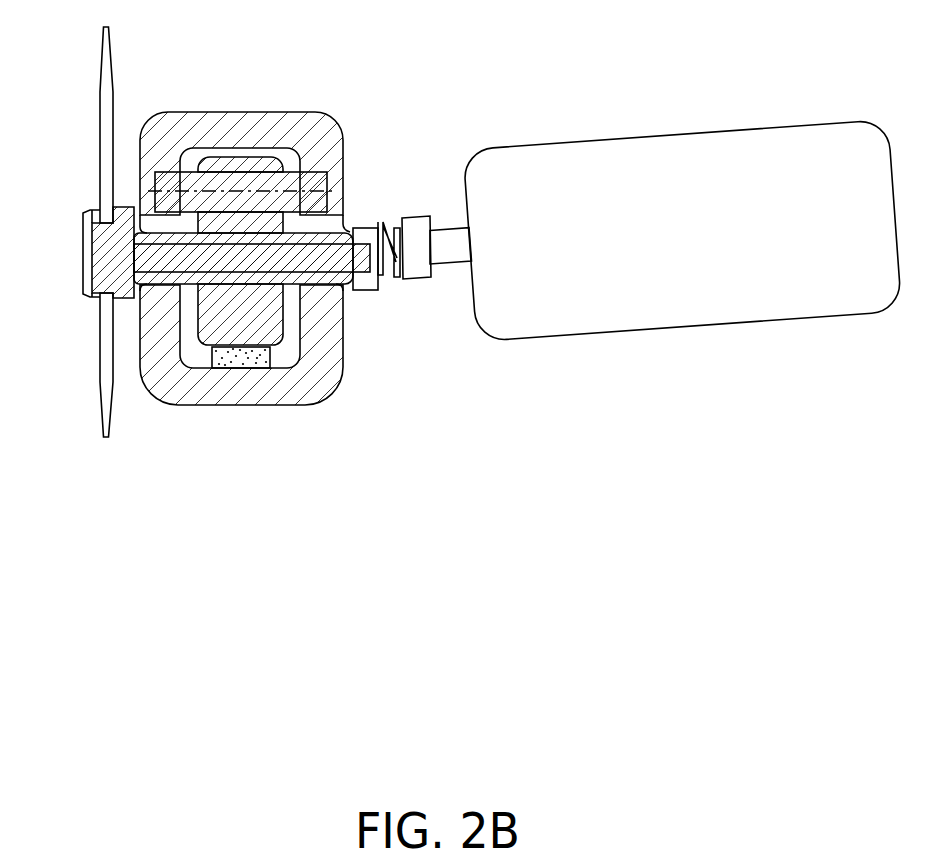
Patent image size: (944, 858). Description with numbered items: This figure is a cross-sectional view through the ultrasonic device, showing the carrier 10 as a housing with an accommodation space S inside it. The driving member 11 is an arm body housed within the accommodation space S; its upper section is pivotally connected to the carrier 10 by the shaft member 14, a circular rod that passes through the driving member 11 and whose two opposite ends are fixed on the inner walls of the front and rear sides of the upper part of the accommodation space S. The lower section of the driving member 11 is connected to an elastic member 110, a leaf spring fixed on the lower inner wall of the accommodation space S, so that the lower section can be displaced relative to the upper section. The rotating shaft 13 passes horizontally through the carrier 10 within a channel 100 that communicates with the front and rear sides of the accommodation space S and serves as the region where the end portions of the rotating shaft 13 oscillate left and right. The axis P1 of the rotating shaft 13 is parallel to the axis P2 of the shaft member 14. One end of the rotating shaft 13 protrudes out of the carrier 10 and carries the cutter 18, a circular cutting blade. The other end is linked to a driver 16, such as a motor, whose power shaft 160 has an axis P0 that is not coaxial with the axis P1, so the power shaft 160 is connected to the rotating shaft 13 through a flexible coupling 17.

The carrier 10 is at (293, 397).
The channel 100 is at (147, 231).
The driving member 11 is at (202, 337).
The elastic member 110 is at (238, 363).
The rotating shaft 13 is at (97, 238).
The shaft member 14 is at (237, 180).
The driver 16 is at (590, 150).
The power shaft 160 is at (440, 232).
The flexible coupling 17 is at (400, 225).
The cutter 18 is at (106, 400).
The accommodation space S is at (192, 155).
The axis of the power shaft P0 is at (510, 244).
The axis of the rotating shaft P1 is at (535, 240).
The axis of the shaft member P2 is at (290, 188).